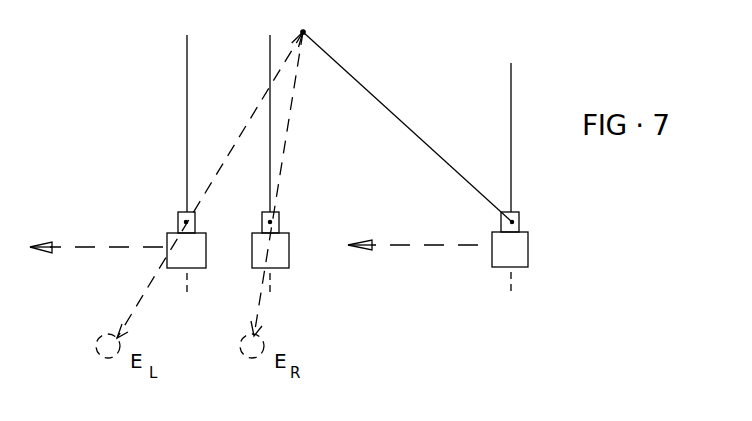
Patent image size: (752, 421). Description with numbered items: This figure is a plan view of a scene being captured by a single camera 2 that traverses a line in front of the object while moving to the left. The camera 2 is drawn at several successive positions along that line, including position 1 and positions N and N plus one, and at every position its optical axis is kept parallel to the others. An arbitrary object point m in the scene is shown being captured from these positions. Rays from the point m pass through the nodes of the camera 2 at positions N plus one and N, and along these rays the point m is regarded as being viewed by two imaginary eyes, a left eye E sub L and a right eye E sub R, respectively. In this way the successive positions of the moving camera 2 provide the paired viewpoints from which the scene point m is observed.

The camera 2 is at (528, 244).
The camera position 1 is at (510, 197).
The camera position n N is at (270, 182).
The object point m is at (314, 23).